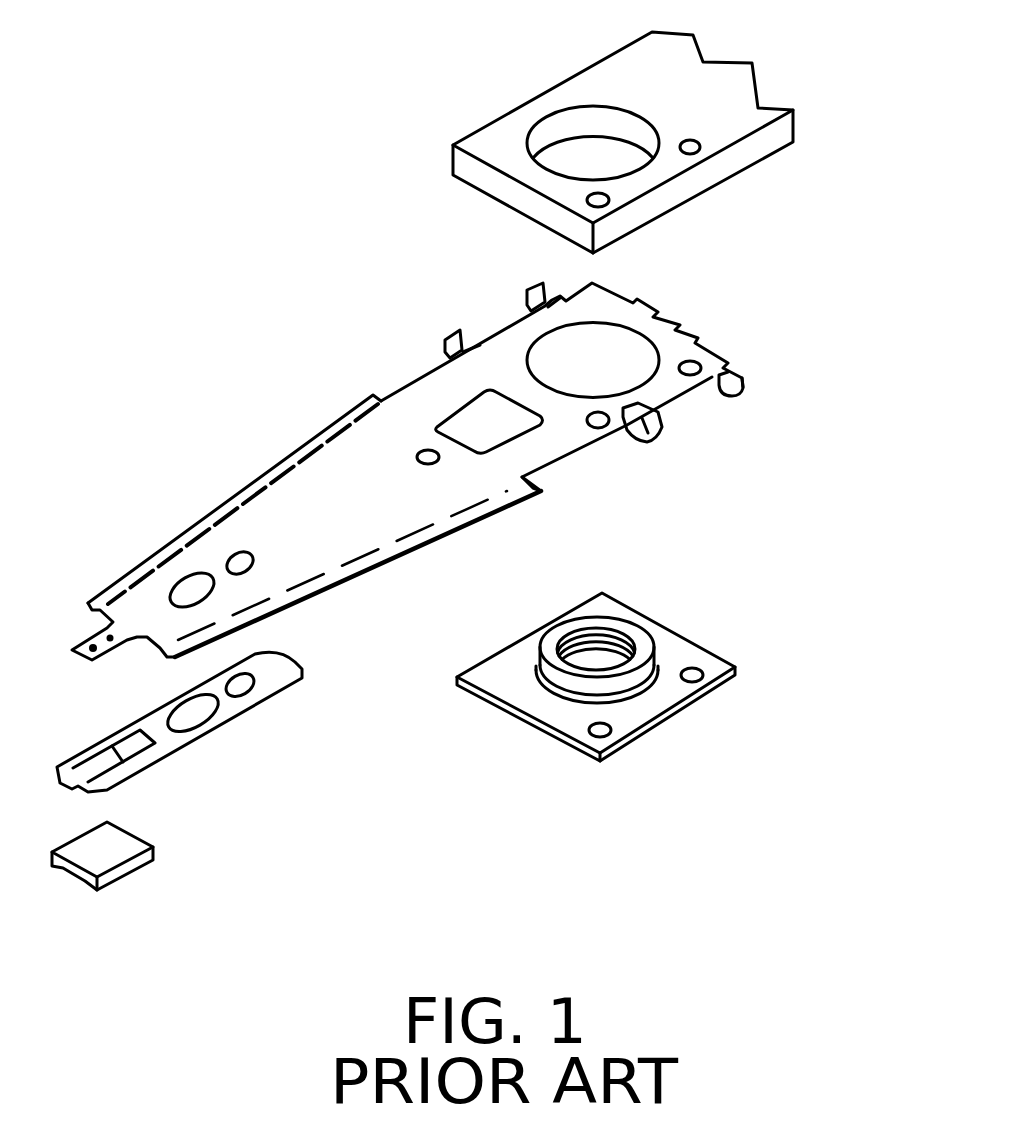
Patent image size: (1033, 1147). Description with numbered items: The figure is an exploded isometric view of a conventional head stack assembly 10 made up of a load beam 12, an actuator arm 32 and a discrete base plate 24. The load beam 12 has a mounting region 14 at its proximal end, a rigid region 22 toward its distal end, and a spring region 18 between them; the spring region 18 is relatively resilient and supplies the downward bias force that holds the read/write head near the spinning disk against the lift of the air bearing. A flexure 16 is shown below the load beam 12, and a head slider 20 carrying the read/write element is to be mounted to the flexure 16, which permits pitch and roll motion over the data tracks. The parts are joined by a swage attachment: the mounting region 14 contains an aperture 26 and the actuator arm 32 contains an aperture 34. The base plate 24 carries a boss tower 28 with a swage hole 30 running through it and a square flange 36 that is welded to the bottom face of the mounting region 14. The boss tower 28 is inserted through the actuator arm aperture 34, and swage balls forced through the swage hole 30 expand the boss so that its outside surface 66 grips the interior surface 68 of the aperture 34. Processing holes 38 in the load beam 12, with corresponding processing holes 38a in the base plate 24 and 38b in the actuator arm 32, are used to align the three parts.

The head stack assembly 10 is at (193, 217).
The load beam 12 is at (429, 447).
The mounting region 14 is at (520, 334).
The flexure 16 is at (212, 728).
The spring region 18 is at (420, 403).
The head slider 20 is at (128, 870).
The rigid region 22 is at (233, 530).
The base plate 24 is at (639, 649).
The aperture 26 is at (662, 356).
The boss tower 28 is at (567, 685).
The swage hole 30 is at (607, 643).
The actuator arm 32 is at (614, 147).
The actuator arm aperture 34 is at (545, 133).
The square flange 36 is at (713, 677).
The processing holes 38 is at (688, 378).
The processing holes 38a is at (613, 727).
The processing holes 38b is at (610, 202).
The outside surface 66 is at (543, 673).
The interior surface 68 is at (638, 127).